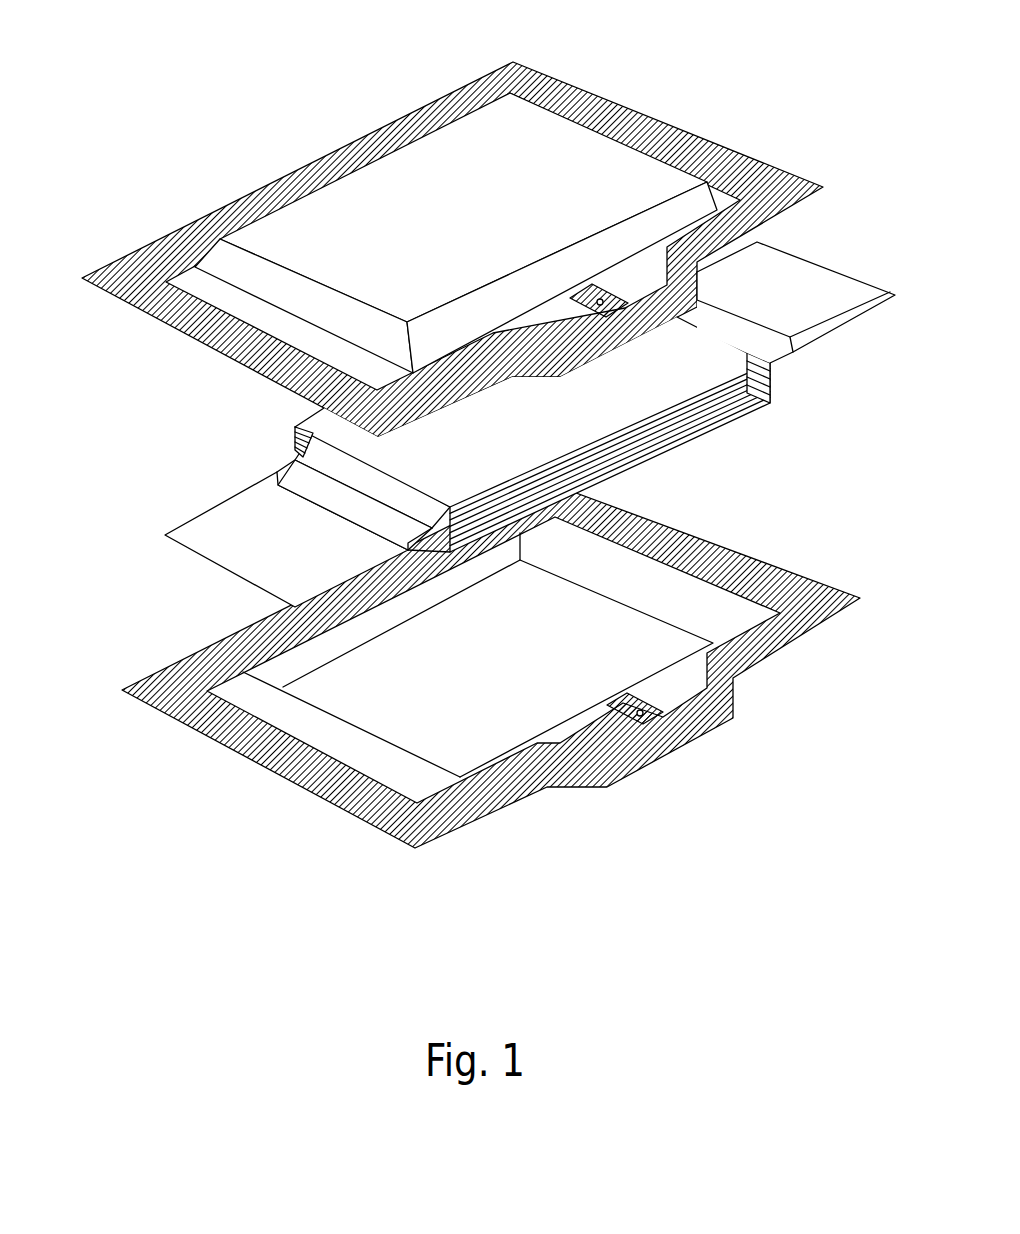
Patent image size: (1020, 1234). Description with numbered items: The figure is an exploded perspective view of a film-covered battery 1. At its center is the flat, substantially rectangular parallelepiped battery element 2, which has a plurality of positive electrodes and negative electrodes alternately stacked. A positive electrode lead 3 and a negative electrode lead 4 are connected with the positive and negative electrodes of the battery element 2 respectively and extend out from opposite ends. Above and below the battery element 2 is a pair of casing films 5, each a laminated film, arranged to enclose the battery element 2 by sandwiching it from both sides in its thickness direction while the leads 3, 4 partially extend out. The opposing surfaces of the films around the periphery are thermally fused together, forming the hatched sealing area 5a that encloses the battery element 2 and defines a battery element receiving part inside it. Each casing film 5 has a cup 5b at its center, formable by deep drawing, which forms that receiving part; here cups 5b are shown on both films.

The film-covered battery 1 is at (475, 473).
The battery element 2 is at (730, 410).
The positive electrode lead 3 is at (222, 552).
The negative electrode lead 4 is at (850, 315).
The casing film 5 is at (454, 473).
The sealing area 5a is at (210, 742).
The cup 5b is at (473, 727).